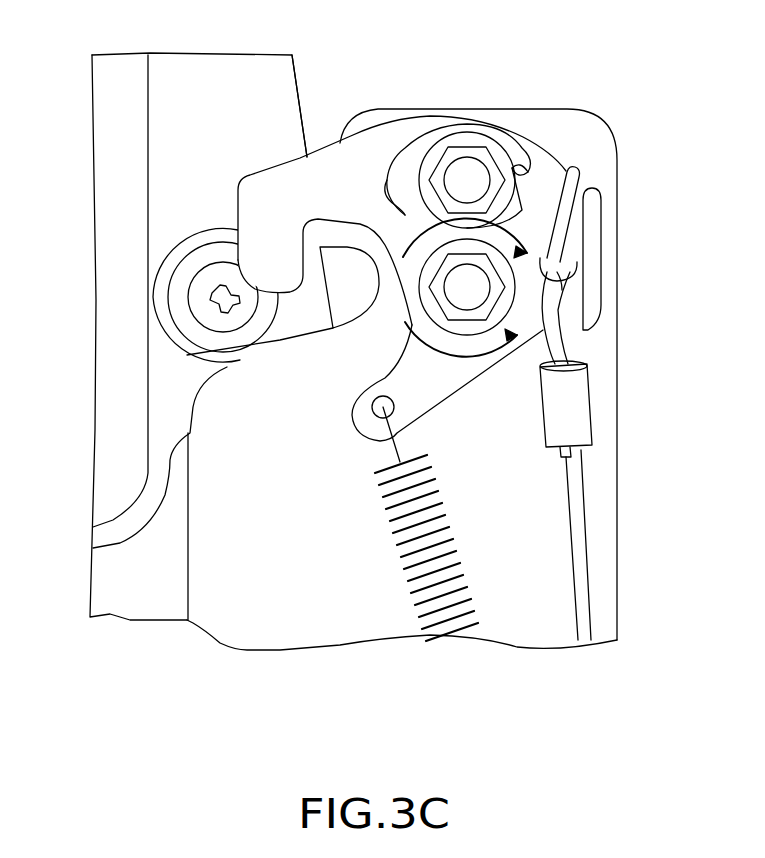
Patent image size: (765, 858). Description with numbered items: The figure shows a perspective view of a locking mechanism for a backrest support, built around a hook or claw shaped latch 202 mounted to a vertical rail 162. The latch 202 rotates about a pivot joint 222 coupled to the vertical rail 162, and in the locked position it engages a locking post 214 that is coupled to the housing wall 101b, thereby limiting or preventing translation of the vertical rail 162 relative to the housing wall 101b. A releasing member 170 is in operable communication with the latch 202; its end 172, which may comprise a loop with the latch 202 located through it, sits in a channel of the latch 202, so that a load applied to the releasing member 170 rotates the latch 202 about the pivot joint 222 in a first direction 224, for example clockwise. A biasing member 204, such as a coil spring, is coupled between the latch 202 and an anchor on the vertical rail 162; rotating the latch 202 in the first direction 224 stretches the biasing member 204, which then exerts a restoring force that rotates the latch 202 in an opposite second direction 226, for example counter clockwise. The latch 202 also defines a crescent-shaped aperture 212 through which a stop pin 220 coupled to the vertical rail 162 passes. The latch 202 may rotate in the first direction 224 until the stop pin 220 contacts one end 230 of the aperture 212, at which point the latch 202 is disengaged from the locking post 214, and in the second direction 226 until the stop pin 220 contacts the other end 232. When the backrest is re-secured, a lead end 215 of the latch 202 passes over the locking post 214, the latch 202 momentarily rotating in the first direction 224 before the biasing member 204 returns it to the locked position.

The housing wall 101b is at (283, 98).
The vertical rail 162 is at (319, 565).
The releasing member 170 is at (582, 515).
The end of releasing member 172 is at (575, 333).
The latch 202 is at (243, 177).
The biasing member 204 is at (415, 592).
The aperture 212 is at (416, 138).
The locking post 214 is at (187, 355).
The lead end of latch 215 is at (274, 270).
The stop pin 220 is at (467, 170).
The pivot joint 222 is at (473, 297).
The first direction 224 is at (568, 172).
The second direction 226 is at (480, 355).
The end of aperture 230 is at (400, 185).
The end of aperture 232 is at (522, 157).